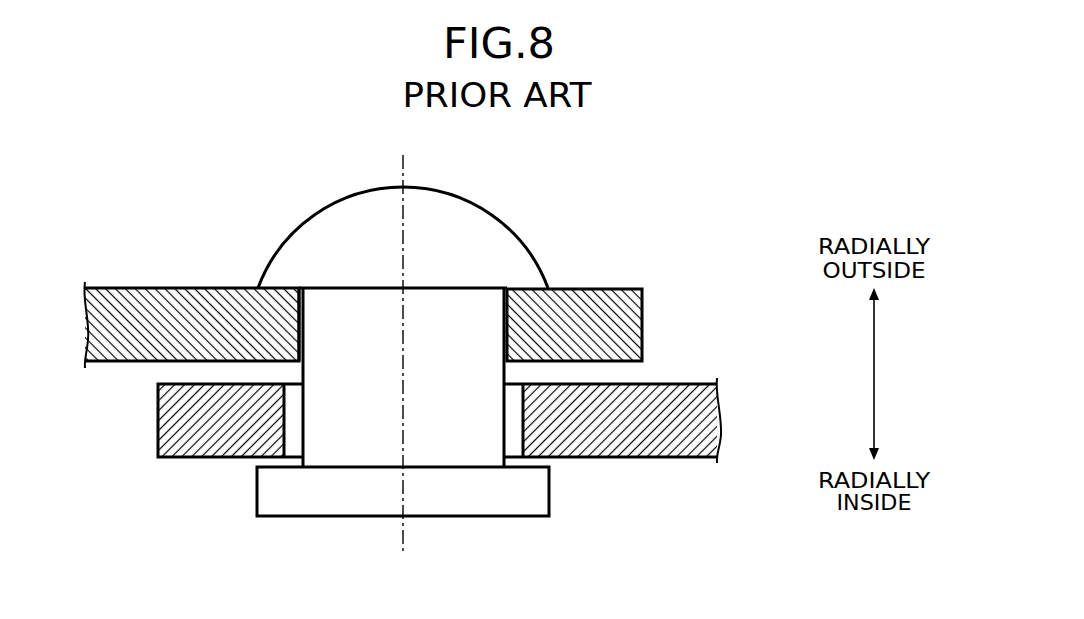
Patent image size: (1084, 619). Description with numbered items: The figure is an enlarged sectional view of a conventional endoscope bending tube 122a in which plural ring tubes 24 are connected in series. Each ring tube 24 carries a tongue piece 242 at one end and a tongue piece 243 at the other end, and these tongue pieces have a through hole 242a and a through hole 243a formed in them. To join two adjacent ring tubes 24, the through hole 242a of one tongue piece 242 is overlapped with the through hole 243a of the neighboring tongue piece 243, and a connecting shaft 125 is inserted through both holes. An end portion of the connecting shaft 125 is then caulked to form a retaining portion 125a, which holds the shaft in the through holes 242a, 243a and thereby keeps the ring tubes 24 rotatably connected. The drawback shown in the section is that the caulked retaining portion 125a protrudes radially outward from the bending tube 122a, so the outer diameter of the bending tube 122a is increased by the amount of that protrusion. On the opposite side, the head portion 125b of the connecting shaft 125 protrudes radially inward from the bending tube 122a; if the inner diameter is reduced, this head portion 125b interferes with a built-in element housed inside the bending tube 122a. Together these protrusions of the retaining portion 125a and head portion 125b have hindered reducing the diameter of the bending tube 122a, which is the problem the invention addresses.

The bending tube 122a is at (108, 228).
The through hole 242a is at (296, 310).
The retaining portion 125a is at (443, 188).
The connecting shaft 125 is at (409, 350).
The tongue piece 242 is at (615, 289).
The ring tube 24 is at (647, 342).
The tongue piece 243 is at (190, 458).
The through hole 243a is at (284, 438).
The head portion 125b is at (497, 517).